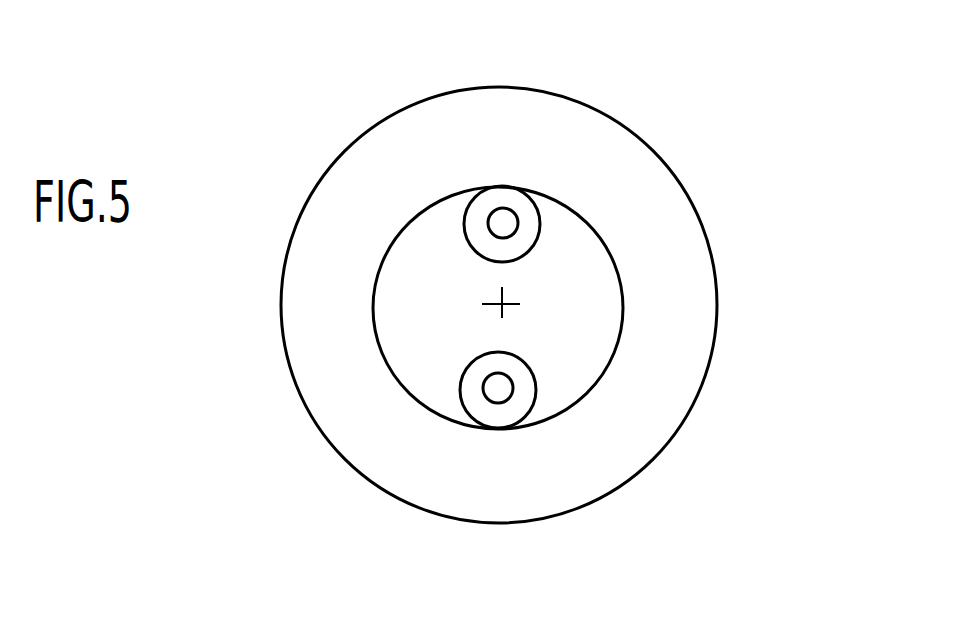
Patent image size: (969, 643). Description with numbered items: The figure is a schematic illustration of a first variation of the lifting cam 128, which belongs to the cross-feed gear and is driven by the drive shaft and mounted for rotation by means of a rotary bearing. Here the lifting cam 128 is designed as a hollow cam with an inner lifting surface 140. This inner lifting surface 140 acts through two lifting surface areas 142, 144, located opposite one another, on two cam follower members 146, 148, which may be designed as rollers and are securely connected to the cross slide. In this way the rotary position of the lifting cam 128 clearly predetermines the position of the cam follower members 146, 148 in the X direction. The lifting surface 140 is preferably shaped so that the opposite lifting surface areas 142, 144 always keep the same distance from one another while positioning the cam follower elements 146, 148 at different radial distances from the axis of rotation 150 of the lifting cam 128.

The lifting cam 128 is at (670, 142).
The inner lifting surface 140 is at (596, 239).
The lifting surface area 142 is at (482, 184).
The lifting surface area 144 is at (503, 420).
The cam follower member 146 is at (483, 241).
The cam follower member 148 is at (476, 399).
The axis of rotation 150 is at (507, 307).